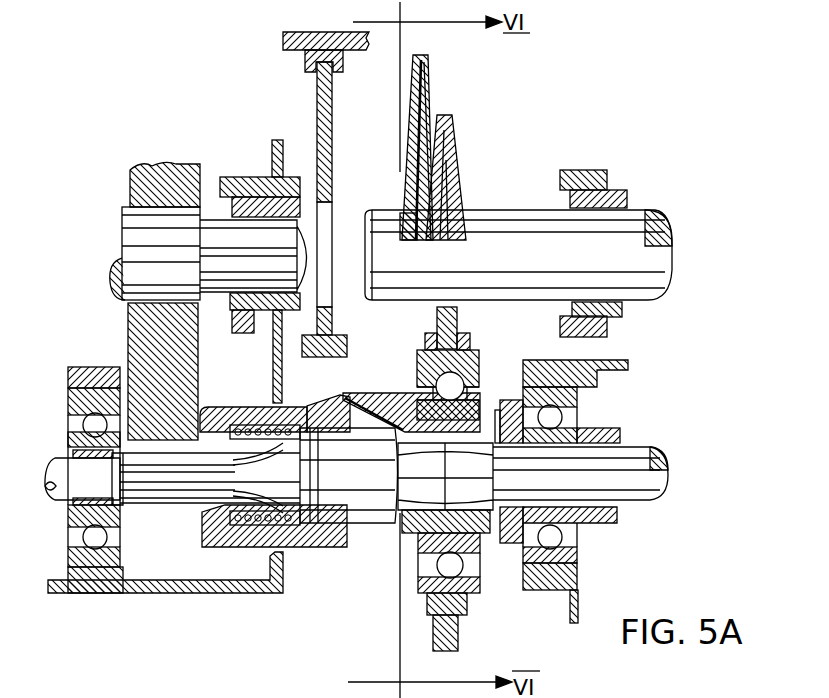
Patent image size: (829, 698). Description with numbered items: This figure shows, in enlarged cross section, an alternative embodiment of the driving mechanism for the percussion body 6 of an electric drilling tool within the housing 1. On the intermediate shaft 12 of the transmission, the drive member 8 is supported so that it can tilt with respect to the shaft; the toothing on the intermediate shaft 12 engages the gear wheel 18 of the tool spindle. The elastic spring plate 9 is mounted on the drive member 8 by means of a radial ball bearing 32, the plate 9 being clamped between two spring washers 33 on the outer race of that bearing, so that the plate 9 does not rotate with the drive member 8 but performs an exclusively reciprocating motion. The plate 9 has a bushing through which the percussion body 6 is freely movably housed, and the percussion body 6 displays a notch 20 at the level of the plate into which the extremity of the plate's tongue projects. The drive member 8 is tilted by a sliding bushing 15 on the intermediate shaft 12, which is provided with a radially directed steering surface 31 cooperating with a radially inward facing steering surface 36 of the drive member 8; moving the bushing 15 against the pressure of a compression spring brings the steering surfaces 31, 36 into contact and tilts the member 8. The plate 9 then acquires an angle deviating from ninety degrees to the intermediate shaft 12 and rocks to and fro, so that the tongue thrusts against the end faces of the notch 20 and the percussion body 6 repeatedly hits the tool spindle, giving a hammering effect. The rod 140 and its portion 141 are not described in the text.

The housing 1 is at (314, 32).
The actuating rod 140 is at (316, 104).
The rod portion 141 is at (323, 224).
The gear wheel 18 is at (145, 187).
The steering surface 31 is at (322, 372).
The radial ball bearing 32 is at (425, 366).
The drive member 8 is at (368, 394).
The spring washers 33 is at (472, 345).
The percussion body 6 is at (635, 230).
The notch 20 is at (462, 205).
The spring plate 9 is at (448, 160).
The intermediate shaft 12 is at (632, 470).
The steering surface 36 is at (378, 432).
The sliding bushing 15 is at (222, 548).